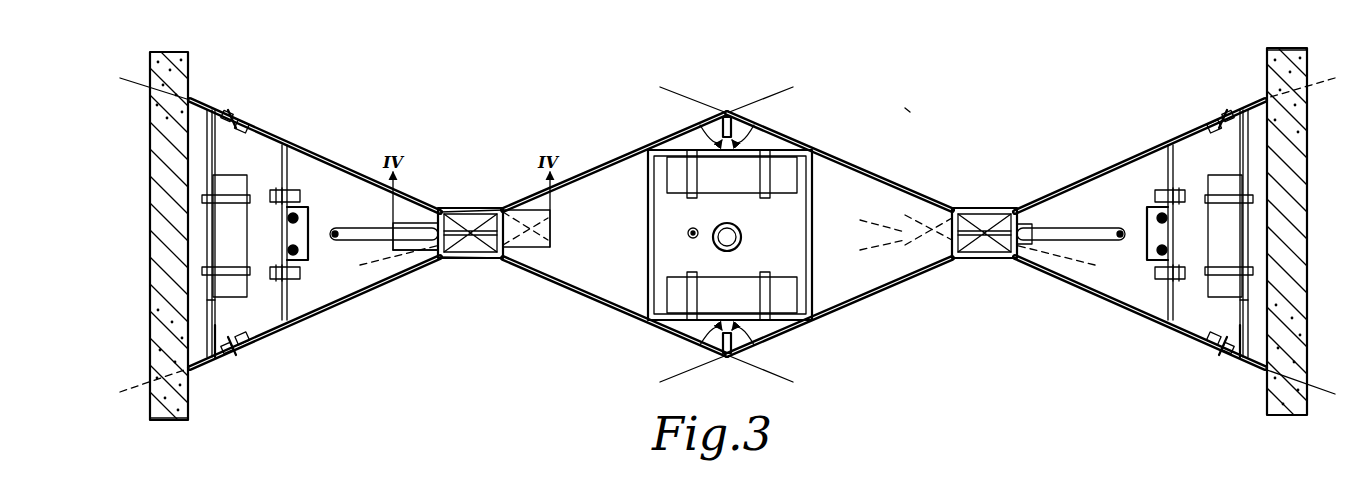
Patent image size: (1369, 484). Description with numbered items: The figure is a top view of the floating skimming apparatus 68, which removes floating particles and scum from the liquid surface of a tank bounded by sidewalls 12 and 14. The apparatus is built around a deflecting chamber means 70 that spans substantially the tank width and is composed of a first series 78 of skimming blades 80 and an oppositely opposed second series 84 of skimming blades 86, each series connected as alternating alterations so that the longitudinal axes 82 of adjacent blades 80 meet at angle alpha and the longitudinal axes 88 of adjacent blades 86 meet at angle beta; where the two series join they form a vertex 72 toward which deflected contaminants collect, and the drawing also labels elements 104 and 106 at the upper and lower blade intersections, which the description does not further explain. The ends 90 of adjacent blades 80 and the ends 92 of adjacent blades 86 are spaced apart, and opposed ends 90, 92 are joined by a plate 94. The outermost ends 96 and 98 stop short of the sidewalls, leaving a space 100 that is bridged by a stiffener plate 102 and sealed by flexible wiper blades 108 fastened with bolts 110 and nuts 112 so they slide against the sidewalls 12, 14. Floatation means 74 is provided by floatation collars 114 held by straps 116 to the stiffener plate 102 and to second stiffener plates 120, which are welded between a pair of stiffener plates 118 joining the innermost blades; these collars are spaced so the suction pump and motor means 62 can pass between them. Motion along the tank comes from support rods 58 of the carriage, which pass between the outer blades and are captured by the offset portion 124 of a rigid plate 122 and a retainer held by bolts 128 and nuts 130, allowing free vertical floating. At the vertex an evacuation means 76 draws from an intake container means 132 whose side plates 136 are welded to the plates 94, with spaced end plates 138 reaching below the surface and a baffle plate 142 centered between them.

The sidewall 12 is at (1306, 52).
The sidewall 14 is at (150, 406).
The support rods 58 is at (286, 222).
The suction pump and motor means 62 is at (714, 248).
The floating skimming apparatus 68 is at (905, 106).
The deflecting chamber means 70 is at (573, 165).
The vertex 72 is at (497, 262).
The floatation means 74 is at (248, 297).
The evacuation means 76 is at (438, 213).
The first series 78 is at (655, 140).
The skimming blades 80 is at (318, 160).
The longitudinal axes 82 is at (125, 78).
The second series 84 is at (632, 330).
The skimming blades 86 is at (322, 312).
The longitudinal axes 88 is at (122, 388).
The ends 90 is at (440, 208).
The ends 92 is at (438, 258).
The plate 94 is at (400, 262).
The ends 96 is at (218, 130).
The ends 98 is at (250, 336).
The space 100 is at (158, 186).
The stiffener plate 102 is at (186, 160).
The upper pivot pin 104 is at (703, 118).
The lower pivot pin 106 is at (712, 343).
The flexible wiper blades 108 is at (198, 105).
The bolts 110 is at (238, 112).
The nuts 112 is at (248, 126).
The floatation collars 114 is at (222, 182).
The straps 116 is at (200, 270).
The stiffener plates 118 is at (652, 213).
The second stiffener plates 120 is at (785, 140).
The rigid plate 122 is at (287, 190).
The offset portion 124 is at (306, 232).
The bolts 128 is at (272, 280).
The nuts 130 is at (295, 280).
The intake container means 132 is at (460, 210).
The side plates 136 is at (462, 270).
The end plates 138 is at (470, 208).
The baffle plate 142 is at (463, 228).